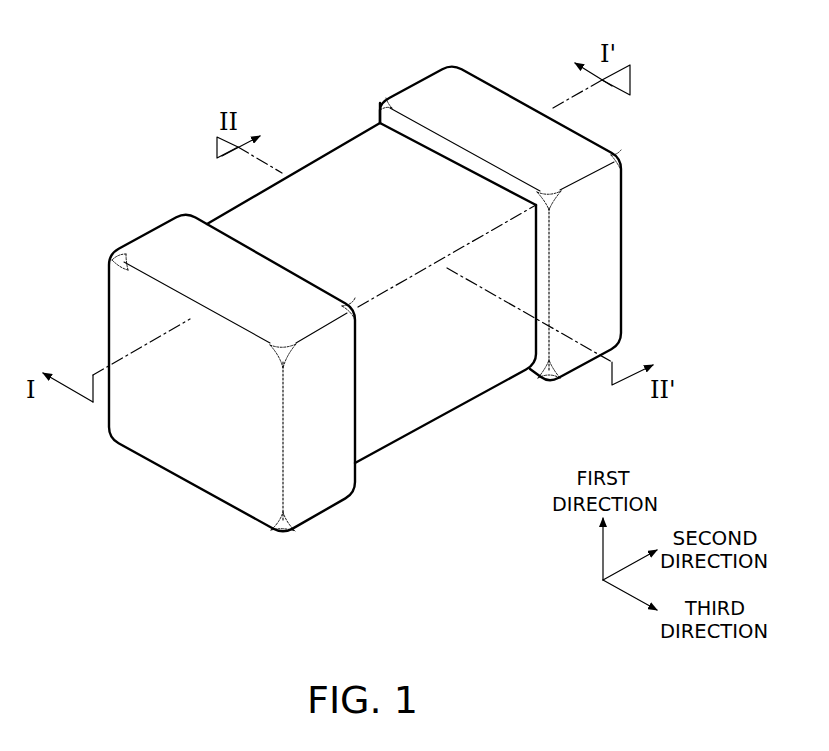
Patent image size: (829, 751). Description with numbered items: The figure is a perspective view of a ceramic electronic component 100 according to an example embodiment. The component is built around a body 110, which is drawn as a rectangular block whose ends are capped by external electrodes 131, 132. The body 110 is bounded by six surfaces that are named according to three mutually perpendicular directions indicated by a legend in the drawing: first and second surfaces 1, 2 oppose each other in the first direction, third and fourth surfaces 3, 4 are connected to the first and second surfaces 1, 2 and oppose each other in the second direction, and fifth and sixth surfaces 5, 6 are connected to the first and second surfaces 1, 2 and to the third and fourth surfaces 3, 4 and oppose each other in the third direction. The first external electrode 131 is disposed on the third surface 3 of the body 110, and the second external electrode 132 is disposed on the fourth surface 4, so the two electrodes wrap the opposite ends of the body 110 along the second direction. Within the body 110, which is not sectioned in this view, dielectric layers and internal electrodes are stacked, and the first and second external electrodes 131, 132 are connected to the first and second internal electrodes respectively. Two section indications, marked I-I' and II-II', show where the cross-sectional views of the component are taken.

The ceramic electronic component 100 is at (146, 34).
The body 110 is at (245, 233).
The first external electrode 131 is at (167, 247).
The second external electrode 132 is at (424, 101).
The first surface 1 is at (407, 388).
The second surface 2 is at (381, 179).
The third surface 3 is at (200, 434).
The fourth surface 4 is at (571, 238).
The fifth surface 5 is at (328, 200).
The sixth surface 6 is at (470, 358).